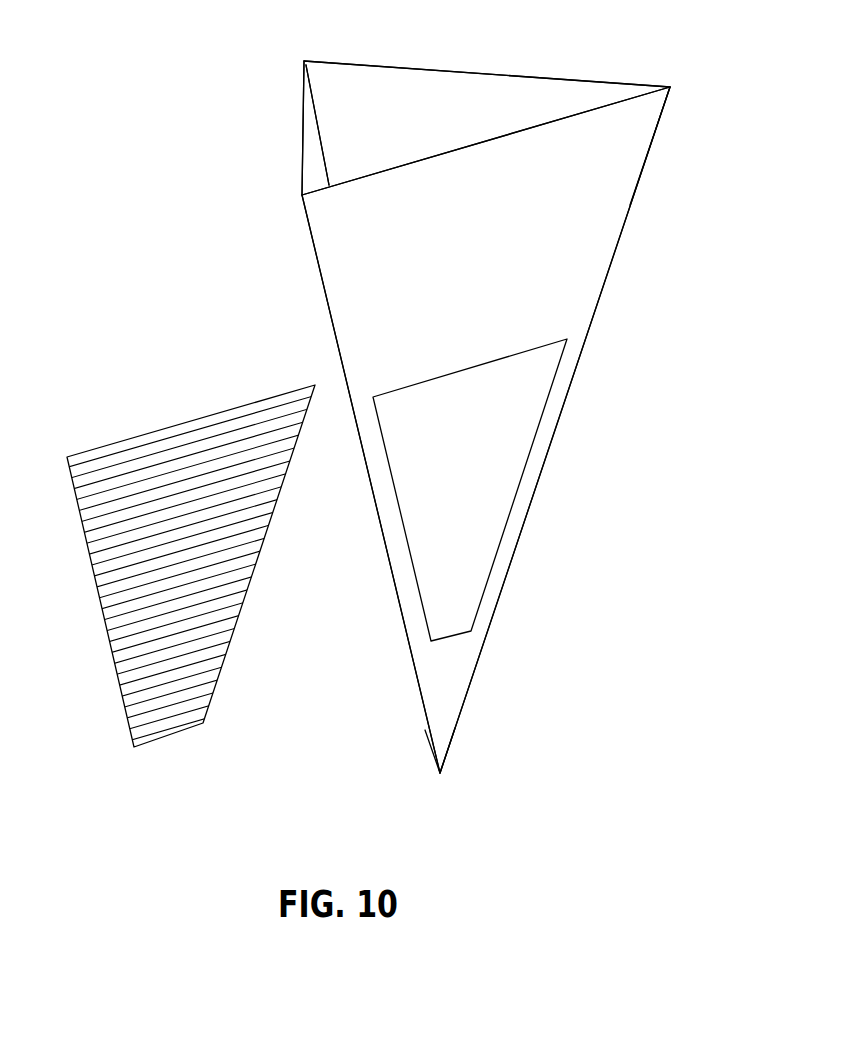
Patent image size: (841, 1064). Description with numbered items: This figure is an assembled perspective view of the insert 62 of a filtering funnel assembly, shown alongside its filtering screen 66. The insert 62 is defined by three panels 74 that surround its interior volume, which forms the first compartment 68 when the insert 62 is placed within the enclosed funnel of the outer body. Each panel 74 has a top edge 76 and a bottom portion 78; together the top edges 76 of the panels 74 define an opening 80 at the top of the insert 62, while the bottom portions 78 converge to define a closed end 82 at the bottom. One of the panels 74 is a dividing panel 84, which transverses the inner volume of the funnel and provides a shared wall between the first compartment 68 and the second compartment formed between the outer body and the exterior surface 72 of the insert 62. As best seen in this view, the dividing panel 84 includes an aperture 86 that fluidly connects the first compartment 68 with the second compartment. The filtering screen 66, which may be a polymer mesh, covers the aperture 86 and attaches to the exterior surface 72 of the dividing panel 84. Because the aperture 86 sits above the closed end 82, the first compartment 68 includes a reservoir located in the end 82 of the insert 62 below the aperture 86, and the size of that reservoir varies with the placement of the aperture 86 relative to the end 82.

The insert 62 is at (136, 226).
The filtering screen 66 is at (130, 578).
The first compartment 68 is at (362, 97).
The exterior surface 72 is at (588, 188).
The panel 74 is at (312, 143).
The top edge 76 is at (302, 166).
The bottom portion 78 is at (442, 697).
The opening 80 is at (489, 62).
The closed end 82 is at (459, 786).
The dividing panel 84 is at (492, 283).
The aperture 86 is at (502, 538).